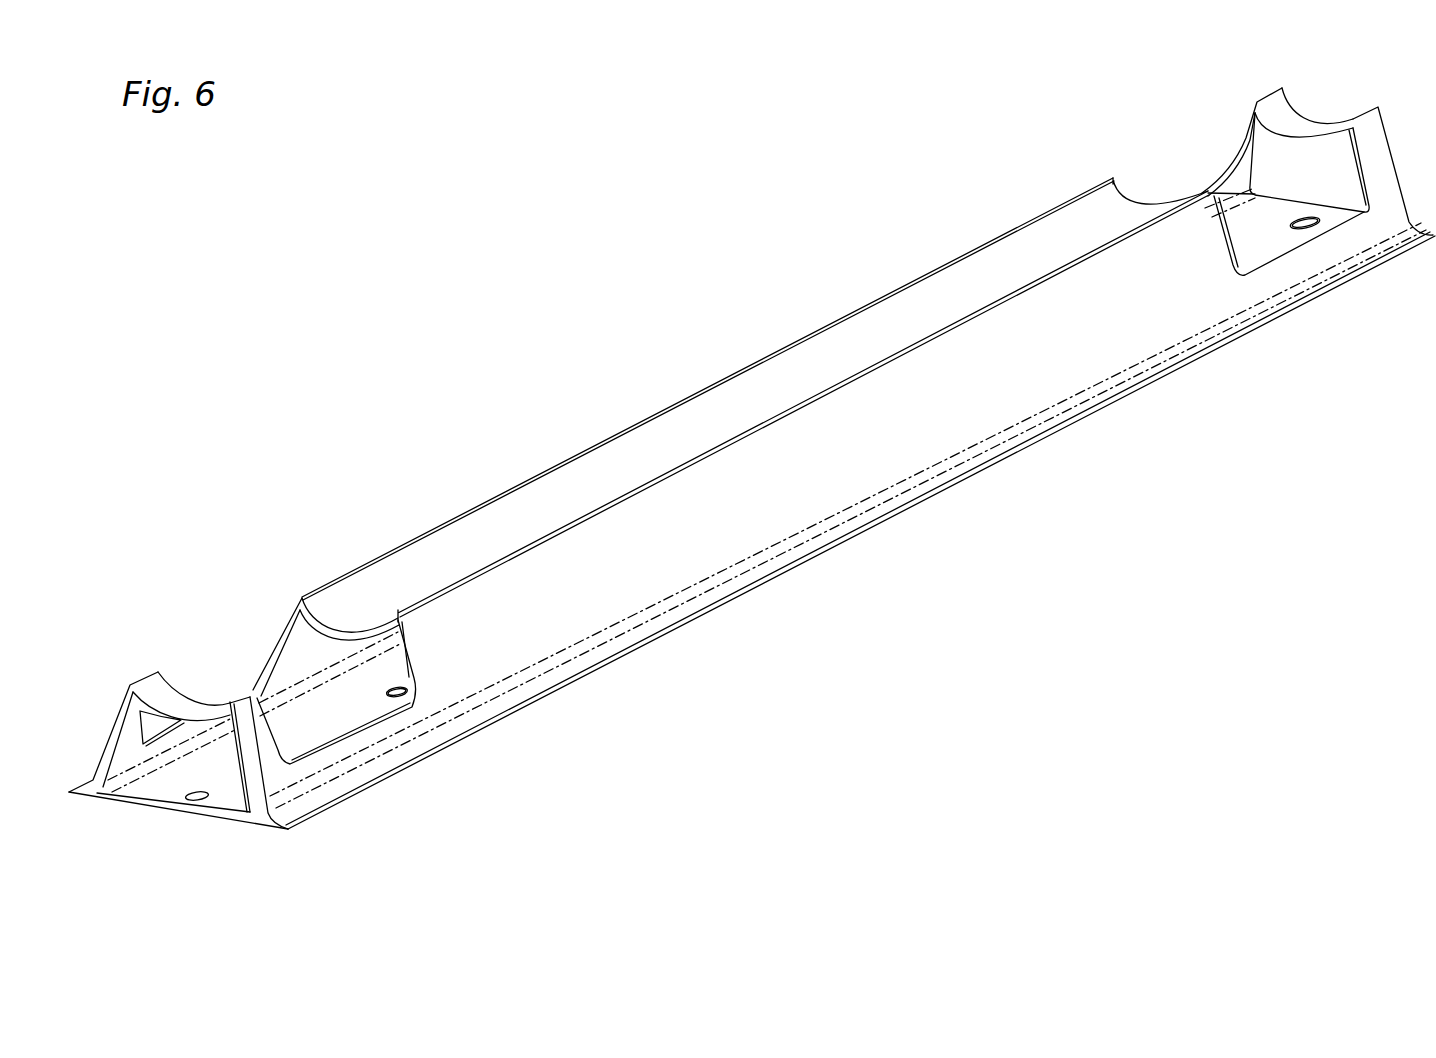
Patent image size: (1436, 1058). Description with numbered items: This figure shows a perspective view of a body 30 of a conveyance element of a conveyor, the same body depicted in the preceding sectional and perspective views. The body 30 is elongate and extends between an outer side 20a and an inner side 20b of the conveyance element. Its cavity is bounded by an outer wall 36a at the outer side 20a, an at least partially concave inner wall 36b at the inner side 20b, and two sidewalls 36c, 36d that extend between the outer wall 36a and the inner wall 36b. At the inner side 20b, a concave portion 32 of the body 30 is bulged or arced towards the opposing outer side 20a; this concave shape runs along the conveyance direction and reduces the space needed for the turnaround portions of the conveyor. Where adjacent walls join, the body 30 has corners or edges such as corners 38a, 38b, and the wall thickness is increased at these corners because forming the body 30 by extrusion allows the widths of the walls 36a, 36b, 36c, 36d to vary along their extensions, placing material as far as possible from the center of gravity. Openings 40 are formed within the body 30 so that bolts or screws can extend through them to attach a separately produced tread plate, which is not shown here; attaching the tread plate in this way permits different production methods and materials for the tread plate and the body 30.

The body 30 is at (1026, 536).
The outer side 20a is at (862, 614).
The inner side 20b is at (732, 316).
The concave portion 32 is at (1136, 186).
The corner 38a is at (243, 608).
The corner 38b is at (1180, 152).
The outer wall 36a is at (215, 818).
The inner wall 36b is at (361, 636).
The sidewall 36c is at (1207, 262).
The sidewall 36d is at (305, 645).
The openings 40 is at (392, 698).